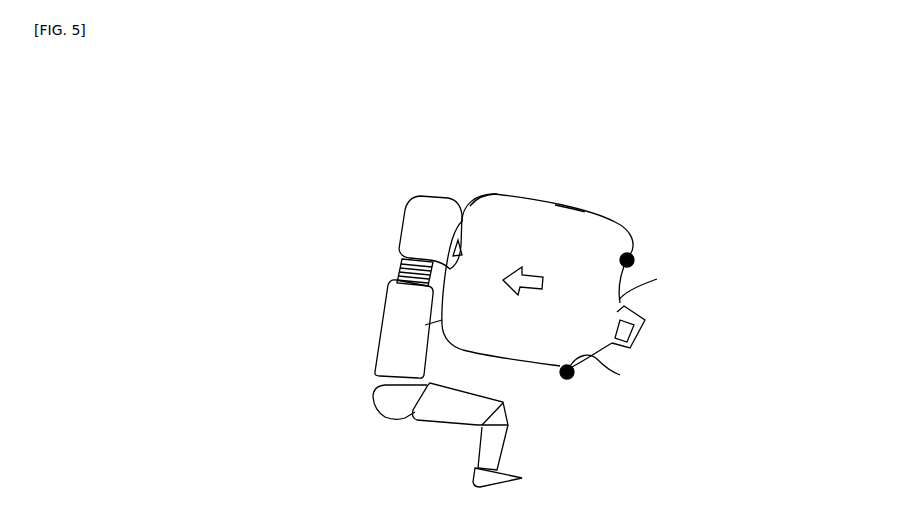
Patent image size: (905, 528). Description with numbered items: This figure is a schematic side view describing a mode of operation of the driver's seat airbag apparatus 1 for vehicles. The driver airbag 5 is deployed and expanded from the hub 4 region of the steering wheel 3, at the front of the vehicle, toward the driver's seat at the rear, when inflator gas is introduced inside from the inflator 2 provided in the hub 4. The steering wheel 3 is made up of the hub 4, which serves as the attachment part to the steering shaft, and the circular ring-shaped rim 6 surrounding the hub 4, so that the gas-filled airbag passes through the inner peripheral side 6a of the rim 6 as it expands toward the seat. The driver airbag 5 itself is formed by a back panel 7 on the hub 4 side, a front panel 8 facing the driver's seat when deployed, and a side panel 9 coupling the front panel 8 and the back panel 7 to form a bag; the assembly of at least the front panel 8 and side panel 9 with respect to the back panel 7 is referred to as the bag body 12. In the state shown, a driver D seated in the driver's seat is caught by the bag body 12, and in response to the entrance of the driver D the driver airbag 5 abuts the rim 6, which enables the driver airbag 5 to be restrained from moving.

The driver's seat airbag apparatus 1 is at (561, 222).
The driver airbag 5 is at (622, 199).
The bag body 12 is at (497, 194).
The side panel 9 is at (573, 218).
The steering wheel 3 is at (652, 249).
The back panel 7 is at (657, 279).
The hub 4 is at (638, 308).
The inflator 2 is at (630, 332).
The inner peripheral side of the rim 6a is at (620, 375).
The rim 6 is at (575, 384).
The front panel 8 is at (442, 320).
The driver D is at (384, 293).